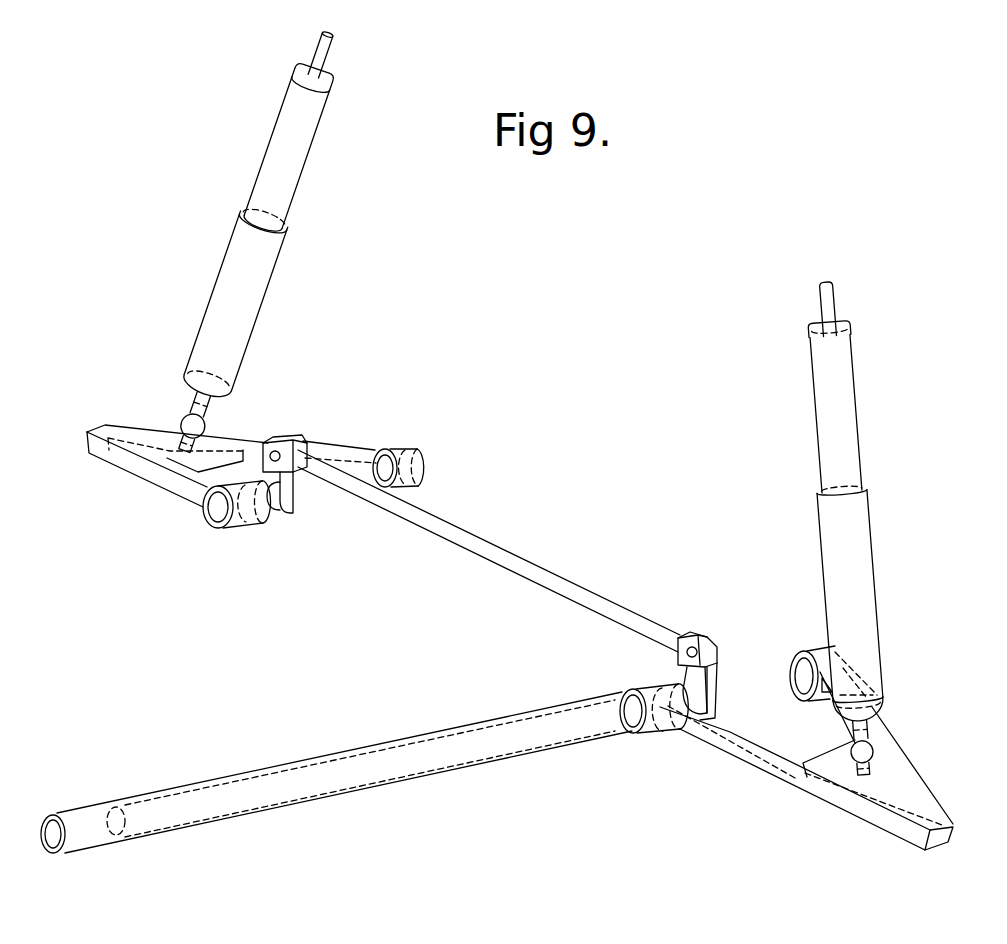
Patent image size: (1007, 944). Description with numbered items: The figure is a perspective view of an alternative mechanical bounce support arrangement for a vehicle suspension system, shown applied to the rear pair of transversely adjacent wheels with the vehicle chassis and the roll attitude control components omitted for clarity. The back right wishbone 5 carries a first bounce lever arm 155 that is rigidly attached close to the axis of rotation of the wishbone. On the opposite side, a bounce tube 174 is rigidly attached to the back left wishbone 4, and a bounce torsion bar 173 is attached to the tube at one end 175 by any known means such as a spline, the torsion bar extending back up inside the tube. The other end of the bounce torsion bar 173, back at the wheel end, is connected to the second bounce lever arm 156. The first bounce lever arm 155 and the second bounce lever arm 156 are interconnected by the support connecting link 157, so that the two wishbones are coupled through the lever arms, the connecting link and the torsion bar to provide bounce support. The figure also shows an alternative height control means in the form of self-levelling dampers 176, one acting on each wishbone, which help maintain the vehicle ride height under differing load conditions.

The back left wishbone 4 is at (853, 806).
The back right wishbone 5 is at (123, 462).
The first bounce lever arm 155 is at (278, 477).
The second bounce lever arm 156 is at (688, 677).
The support connecting link 157 is at (530, 572).
The bounce torsion bar 173 is at (292, 778).
The bounce tube 174 is at (430, 773).
The end of bounce tube 175 is at (88, 818).
The self-levelling dampers 176 is at (232, 277).